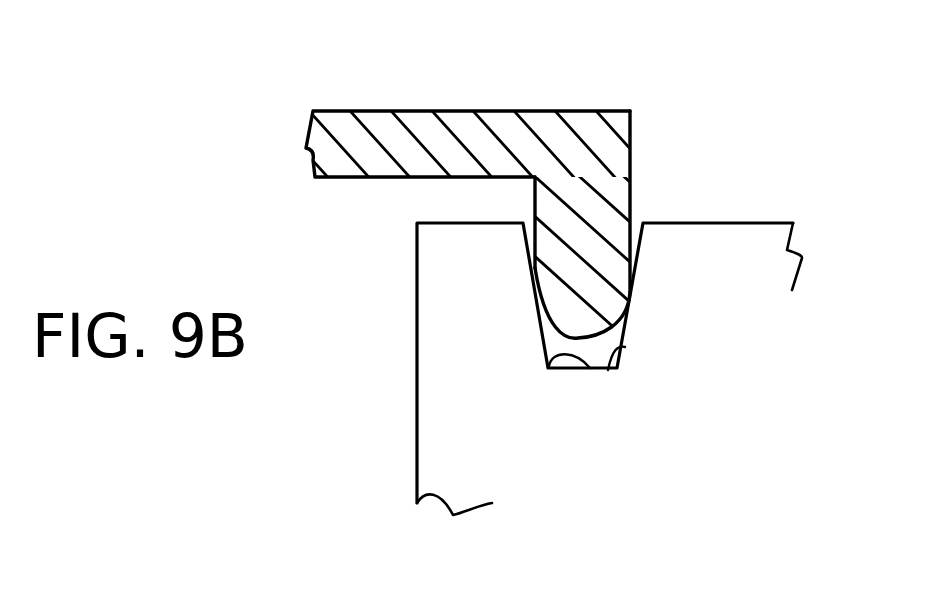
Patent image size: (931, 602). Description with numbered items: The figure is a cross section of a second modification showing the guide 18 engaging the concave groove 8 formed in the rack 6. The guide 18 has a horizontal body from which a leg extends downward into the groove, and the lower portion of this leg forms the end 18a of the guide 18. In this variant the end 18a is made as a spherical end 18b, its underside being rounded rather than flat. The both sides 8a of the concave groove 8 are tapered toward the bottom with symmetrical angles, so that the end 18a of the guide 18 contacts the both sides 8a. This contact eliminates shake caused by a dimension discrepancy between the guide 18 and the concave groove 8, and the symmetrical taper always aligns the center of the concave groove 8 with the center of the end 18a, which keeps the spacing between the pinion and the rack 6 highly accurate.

The rack 6 is at (443, 397).
The concave groove 8 is at (568, 370).
The both sides of the concave groove 8a is at (586, 370).
The guide 18 is at (457, 133).
The end of the guide 18a is at (603, 177).
The spherical end 18b is at (588, 308).